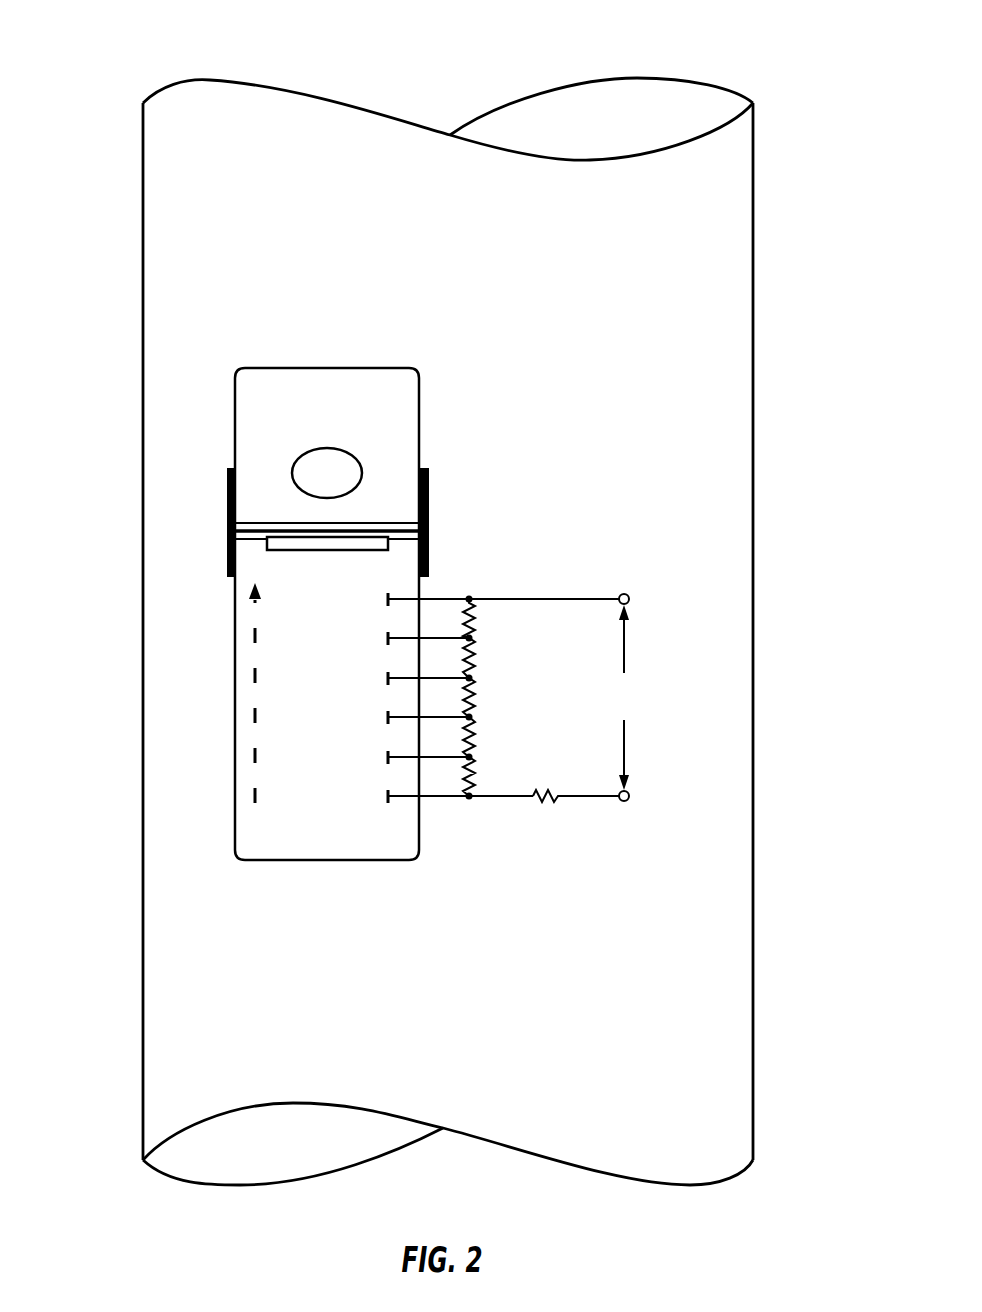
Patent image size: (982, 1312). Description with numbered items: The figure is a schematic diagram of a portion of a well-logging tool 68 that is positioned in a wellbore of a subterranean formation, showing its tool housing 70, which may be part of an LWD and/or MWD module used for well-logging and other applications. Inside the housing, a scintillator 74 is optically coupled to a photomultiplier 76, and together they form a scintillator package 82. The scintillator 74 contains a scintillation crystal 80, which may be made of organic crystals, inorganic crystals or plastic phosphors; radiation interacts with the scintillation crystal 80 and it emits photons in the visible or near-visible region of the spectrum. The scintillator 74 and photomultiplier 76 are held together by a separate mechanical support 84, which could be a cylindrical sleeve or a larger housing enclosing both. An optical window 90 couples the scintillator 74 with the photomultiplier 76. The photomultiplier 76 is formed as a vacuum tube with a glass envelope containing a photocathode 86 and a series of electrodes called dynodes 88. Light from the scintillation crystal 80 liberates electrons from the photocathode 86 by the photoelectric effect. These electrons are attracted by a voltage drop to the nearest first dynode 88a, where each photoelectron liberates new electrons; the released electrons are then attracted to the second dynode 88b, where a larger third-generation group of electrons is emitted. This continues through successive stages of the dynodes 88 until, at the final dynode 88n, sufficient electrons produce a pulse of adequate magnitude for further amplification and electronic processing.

The well-logging tool 68 is at (496, 593).
The tool housing 70 is at (754, 452).
The scintillator 74 is at (302, 454).
The photomultiplier 76 is at (386, 693).
The scintillation crystal 80 is at (293, 467).
The scintillator package 82 is at (492, 535).
The mechanical support 84 is at (228, 482).
The photocathode 86 is at (280, 543).
The dynodes 88 is at (250, 589).
The first dynode 88a is at (390, 594).
The second dynode 88b is at (385, 638).
The final dynode 88n is at (385, 796).
The optical window 90 is at (344, 519).